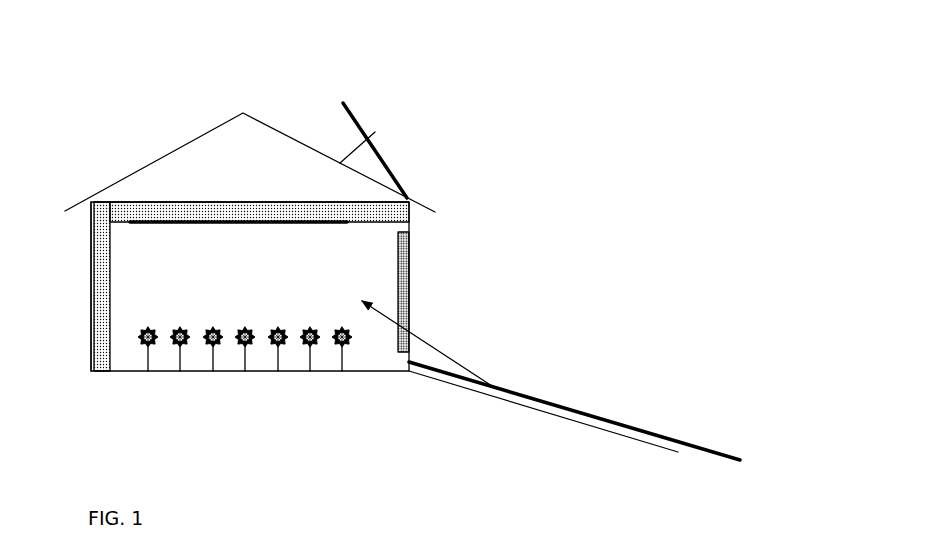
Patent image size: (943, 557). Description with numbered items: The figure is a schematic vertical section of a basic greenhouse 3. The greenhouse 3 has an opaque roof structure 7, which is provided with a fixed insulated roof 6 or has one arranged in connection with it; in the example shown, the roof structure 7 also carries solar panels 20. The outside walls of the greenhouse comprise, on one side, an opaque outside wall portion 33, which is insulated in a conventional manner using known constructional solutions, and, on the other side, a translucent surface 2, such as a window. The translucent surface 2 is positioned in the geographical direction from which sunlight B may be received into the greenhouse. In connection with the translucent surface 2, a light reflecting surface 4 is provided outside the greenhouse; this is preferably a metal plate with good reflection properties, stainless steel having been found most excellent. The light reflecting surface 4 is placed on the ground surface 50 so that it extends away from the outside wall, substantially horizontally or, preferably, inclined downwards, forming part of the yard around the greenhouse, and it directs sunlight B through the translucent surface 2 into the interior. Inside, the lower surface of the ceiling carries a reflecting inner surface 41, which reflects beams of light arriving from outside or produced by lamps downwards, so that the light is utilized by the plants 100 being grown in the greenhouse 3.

The greenhouse 3 is at (180, 102).
The roof structure 7 is at (262, 121).
The solar panels 20 is at (370, 138).
The fixed insulated roof 6 is at (390, 215).
The opaque outside wall portion 33 is at (105, 323).
The reflecting inner surface 41 is at (200, 222).
The translucent surface 2 is at (408, 315).
The plants 100 is at (245, 363).
The light reflecting surface 4 is at (547, 402).
The ground surface 50 is at (528, 406).
The sunlight B is at (490, 228).